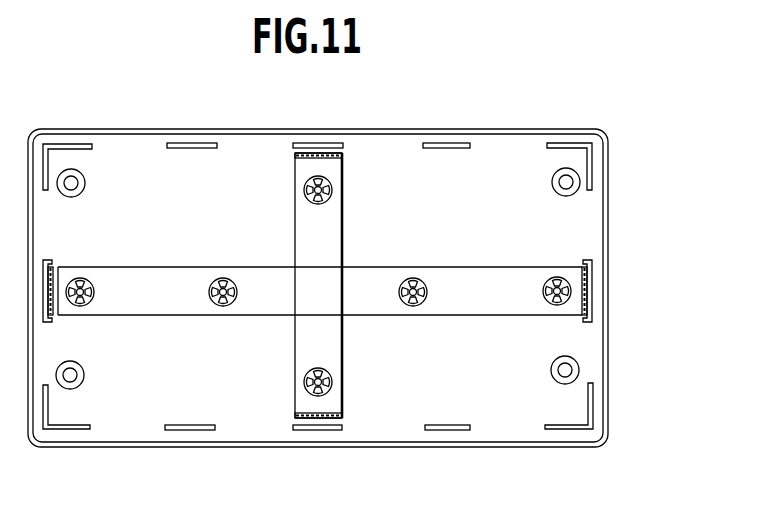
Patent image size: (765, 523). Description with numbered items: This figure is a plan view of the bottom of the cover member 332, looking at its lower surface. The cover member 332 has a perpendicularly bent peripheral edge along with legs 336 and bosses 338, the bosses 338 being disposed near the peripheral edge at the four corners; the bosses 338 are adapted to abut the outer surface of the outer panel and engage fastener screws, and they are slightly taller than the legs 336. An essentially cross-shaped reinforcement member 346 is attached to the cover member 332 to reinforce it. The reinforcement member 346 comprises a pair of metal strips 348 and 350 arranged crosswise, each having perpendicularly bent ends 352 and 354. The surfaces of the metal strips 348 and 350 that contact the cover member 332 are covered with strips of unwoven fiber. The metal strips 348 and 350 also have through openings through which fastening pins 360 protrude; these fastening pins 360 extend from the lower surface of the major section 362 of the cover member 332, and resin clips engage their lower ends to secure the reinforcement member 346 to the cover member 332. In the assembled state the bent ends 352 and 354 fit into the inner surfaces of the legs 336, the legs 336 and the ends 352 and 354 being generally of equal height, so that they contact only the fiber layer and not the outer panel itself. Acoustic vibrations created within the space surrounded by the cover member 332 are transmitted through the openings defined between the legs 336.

The cover member 332 is at (366, 125).
The legs 336 is at (202, 144).
The bosses 338 is at (552, 182).
The reinforcement member 346 is at (317, 285).
The metal strip 348 is at (148, 310).
The metal strip 350 is at (302, 213).
The bent end 352 is at (53, 259).
The bent end 354 is at (343, 157).
The fastening pins 360 is at (332, 190).
The major section 362 is at (115, 183).